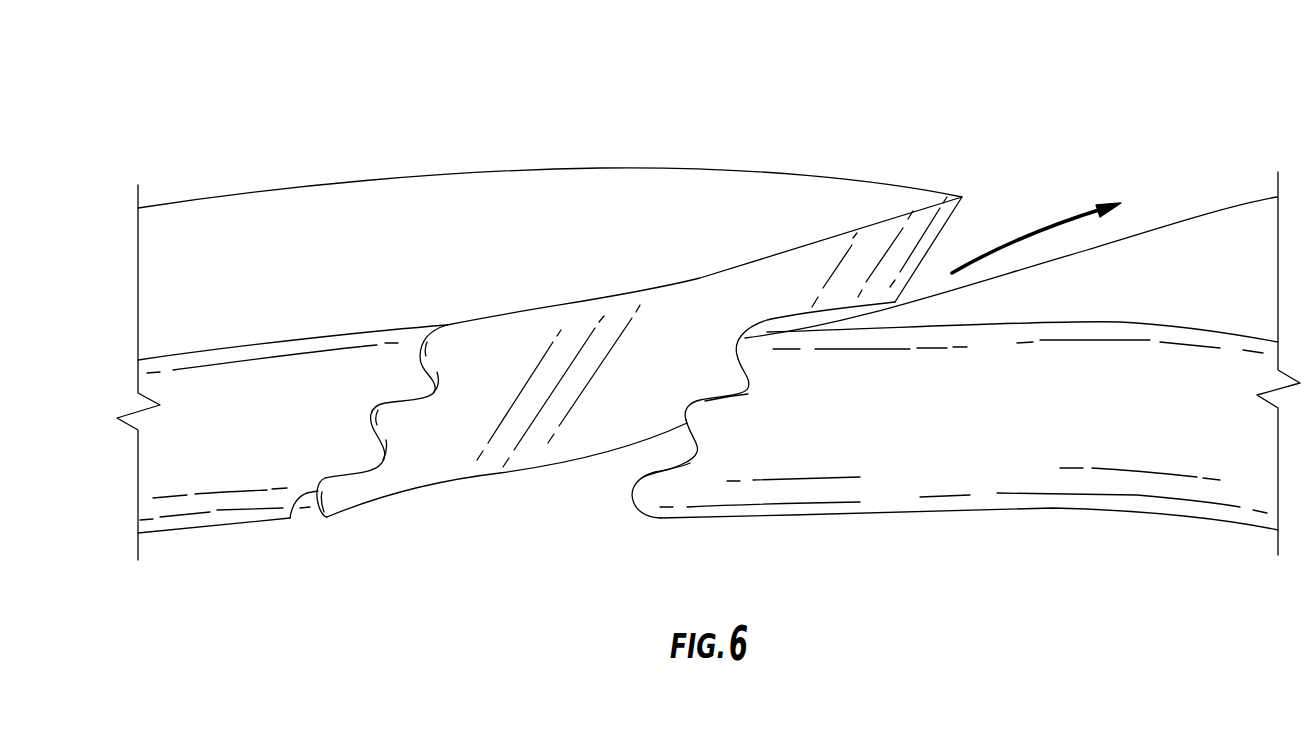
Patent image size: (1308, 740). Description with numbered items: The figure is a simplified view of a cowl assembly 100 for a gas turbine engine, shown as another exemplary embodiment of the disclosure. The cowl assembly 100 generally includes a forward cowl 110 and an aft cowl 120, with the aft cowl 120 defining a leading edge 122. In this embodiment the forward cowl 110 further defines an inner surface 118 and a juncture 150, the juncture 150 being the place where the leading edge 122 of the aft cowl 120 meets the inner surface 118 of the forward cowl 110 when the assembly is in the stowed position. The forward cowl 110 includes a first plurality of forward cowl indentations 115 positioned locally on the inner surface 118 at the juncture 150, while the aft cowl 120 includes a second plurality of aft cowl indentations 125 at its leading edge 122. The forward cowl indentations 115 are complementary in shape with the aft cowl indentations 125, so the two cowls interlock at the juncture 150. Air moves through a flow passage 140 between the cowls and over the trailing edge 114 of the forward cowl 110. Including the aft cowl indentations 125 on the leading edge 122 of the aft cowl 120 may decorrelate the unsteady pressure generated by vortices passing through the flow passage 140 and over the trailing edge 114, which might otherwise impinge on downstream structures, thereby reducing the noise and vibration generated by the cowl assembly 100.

The cowl assembly 100 is at (935, 96).
The forward cowl 110 is at (450, 171).
The trailing edge 114 is at (940, 238).
The forward cowl indentations 115 is at (297, 492).
The inner surface 118 is at (198, 505).
The aft cowl 120 is at (1218, 222).
The leading edge 122 is at (630, 500).
The aft cowl indentations 125 is at (685, 412).
The flow passage 140 is at (1042, 209).
The juncture 150 is at (417, 470).